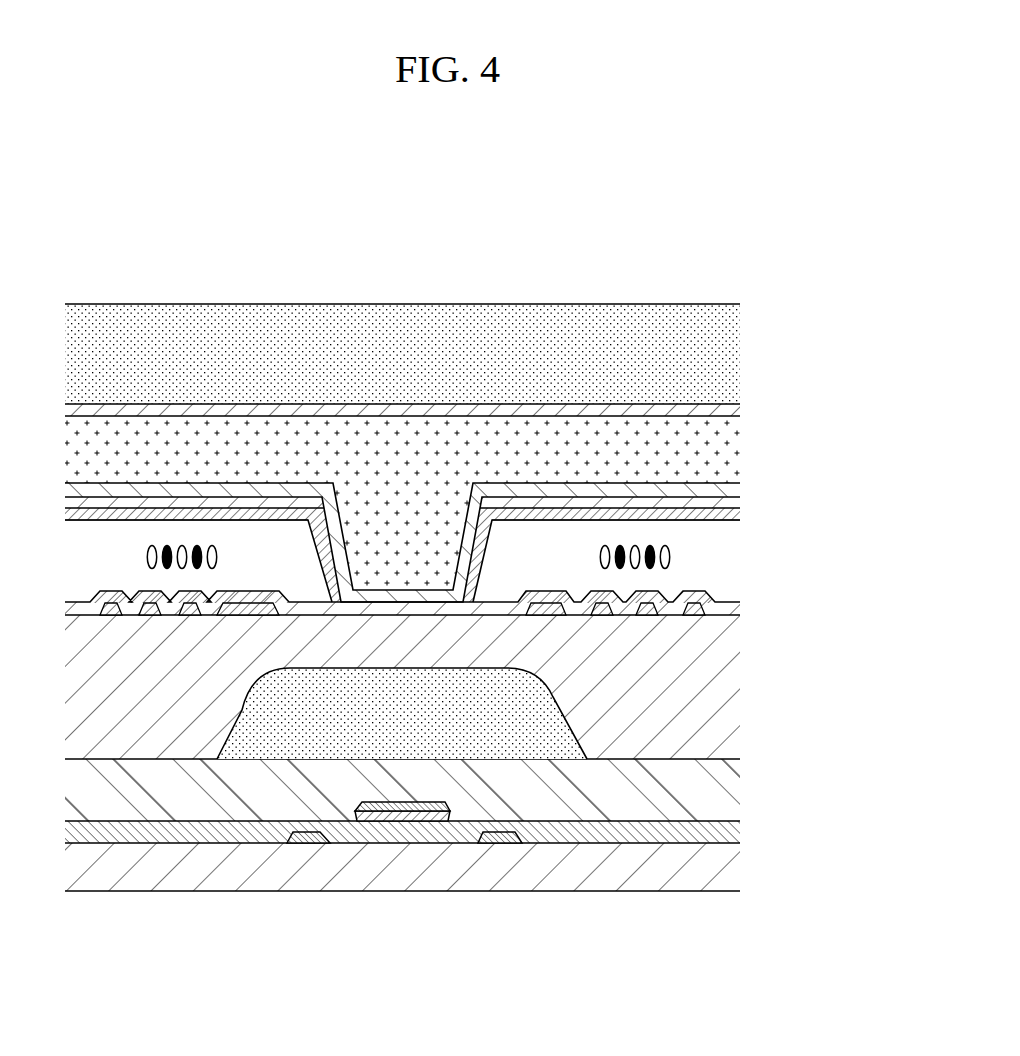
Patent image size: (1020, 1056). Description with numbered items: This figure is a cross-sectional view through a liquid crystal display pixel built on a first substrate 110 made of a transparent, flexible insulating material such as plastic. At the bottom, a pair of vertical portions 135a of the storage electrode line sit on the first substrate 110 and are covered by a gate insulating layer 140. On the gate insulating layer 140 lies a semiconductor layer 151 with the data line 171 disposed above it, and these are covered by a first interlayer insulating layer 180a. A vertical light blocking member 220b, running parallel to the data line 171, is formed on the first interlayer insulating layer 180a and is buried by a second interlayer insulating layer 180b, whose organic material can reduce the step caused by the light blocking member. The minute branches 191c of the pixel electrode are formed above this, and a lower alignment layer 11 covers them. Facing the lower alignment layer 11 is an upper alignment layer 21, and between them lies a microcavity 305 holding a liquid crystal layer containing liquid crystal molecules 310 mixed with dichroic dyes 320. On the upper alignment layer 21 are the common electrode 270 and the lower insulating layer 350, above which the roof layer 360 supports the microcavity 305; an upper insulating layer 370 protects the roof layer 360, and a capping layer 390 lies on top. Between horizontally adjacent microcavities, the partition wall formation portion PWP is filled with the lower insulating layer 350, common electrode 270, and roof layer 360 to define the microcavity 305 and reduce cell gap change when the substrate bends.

The capping layer 390 is at (710, 352).
The upper insulating layer 370 is at (740, 408).
The roof layer 360 is at (717, 443).
The lower insulating layer 350 is at (730, 490).
The common electrode 270 is at (730, 502).
The upper alignment layer 21 is at (740, 520).
The microcavity 305 is at (723, 565).
The liquid crystal molecules 310 is at (602, 548).
The dichroic dyes 320 is at (661, 545).
The partition wall formation portion PWP is at (405, 490).
The lower alignment layer 11 is at (740, 610).
The minute branches 191c is at (650, 610).
The second interlayer insulating layer 180b is at (723, 683).
The vertical light blocking member 220b is at (277, 735).
The first interlayer insulating layer 180a is at (723, 788).
The gate insulating layer 140 is at (733, 833).
The first substrate 110 is at (723, 867).
The vertical portions 135a is at (305, 838).
The semiconductor layer 151 is at (372, 817).
The data line 171 is at (437, 808).